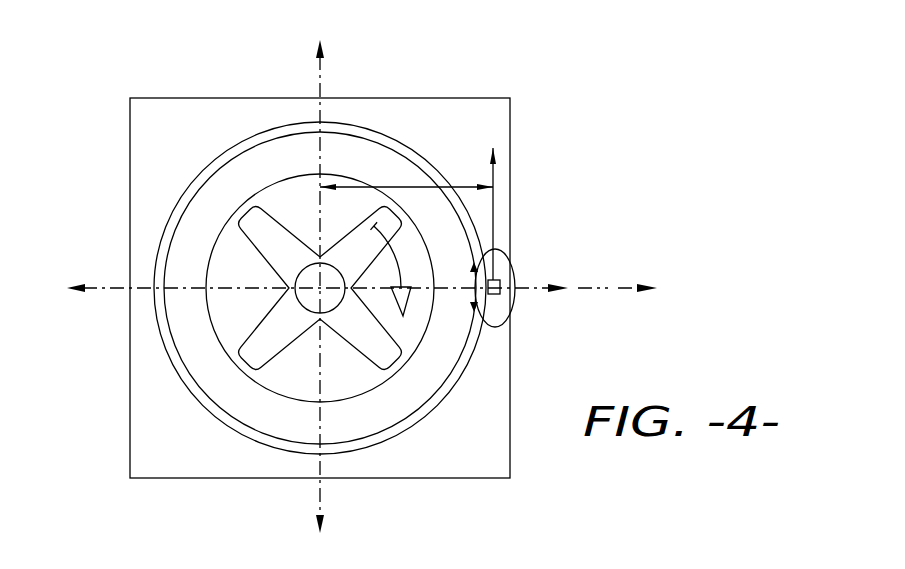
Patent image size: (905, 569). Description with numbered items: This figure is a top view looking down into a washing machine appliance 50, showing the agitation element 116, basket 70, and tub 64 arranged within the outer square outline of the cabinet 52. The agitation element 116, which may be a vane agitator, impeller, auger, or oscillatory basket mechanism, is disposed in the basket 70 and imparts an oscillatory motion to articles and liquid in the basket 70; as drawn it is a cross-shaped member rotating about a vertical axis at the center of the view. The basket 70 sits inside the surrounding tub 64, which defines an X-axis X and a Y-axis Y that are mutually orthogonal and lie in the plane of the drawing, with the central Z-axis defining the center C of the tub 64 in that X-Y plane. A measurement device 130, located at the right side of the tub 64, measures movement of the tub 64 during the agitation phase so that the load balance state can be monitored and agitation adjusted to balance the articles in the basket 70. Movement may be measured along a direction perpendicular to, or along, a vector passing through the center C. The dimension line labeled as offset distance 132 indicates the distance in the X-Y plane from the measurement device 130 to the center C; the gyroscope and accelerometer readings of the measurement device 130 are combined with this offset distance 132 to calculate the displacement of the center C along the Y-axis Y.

The washing machine appliance 50 is at (606, 84).
The housing 52 is at (463, 98).
The tub 64 is at (217, 157).
The basket 70 is at (430, 407).
The agitation element 116 is at (275, 338).
The measurement device 130 is at (472, 308).
The offset distance 132 is at (412, 186).
The center C is at (388, 362).
The X-axis X is at (598, 289).
The Y-axis Y is at (322, 79).